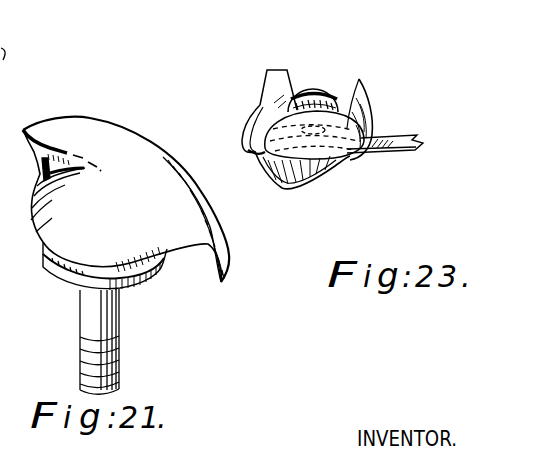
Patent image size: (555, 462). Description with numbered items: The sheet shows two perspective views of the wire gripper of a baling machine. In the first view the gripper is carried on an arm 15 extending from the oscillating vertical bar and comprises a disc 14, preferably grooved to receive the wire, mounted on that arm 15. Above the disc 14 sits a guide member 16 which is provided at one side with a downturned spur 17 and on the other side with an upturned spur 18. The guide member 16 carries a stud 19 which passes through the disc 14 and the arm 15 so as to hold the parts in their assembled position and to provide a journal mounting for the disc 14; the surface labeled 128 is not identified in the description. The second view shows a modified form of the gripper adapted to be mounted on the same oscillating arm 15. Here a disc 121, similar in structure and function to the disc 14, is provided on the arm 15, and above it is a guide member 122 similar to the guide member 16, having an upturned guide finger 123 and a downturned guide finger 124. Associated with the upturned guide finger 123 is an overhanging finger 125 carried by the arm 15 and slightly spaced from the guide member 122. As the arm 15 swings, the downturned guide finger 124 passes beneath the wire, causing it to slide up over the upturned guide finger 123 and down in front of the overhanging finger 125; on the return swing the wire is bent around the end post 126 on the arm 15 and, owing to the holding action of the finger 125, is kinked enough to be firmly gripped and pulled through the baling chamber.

In FIG. 21, the disc 14 is at (153, 281).
In FIG. 21, the guide member 16 is at (171, 124).
In FIG. 21, the downturned spur 17 is at (225, 272).
In FIG. 21, the upturned spur 18 is at (23, 130).
In FIG. 21, the stud 19 is at (119, 357).
In FIG. 21, the fold 128 is at (50, 181).
In FIG. 23, the arm 15 is at (412, 139).
In FIG. 23, the disc 121 is at (338, 140).
In FIG. 23, the guide member 122 is at (262, 141).
In FIG. 23, the upturned guide finger 123 is at (360, 88).
In FIG. 23, the downturned guide finger 124 is at (290, 187).
In FIG. 23, the overhanging finger 125 is at (323, 89).
In FIG. 23, the end post 126 is at (271, 78).